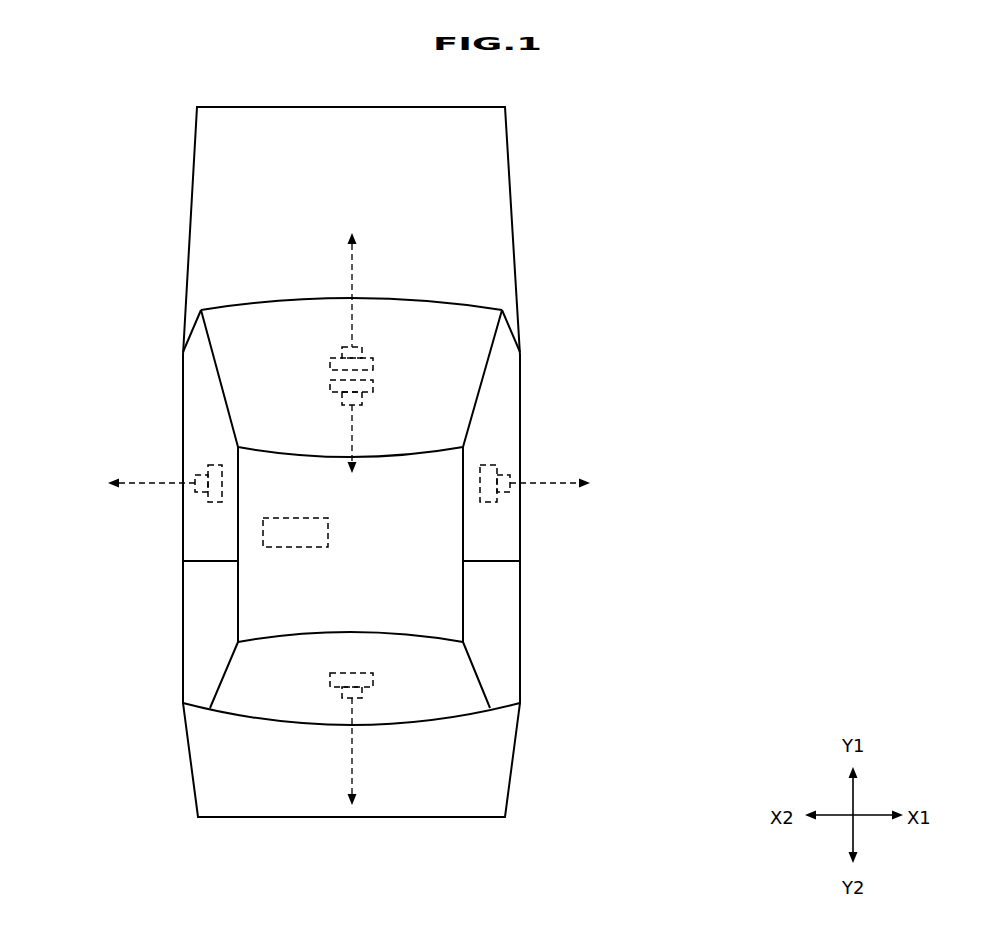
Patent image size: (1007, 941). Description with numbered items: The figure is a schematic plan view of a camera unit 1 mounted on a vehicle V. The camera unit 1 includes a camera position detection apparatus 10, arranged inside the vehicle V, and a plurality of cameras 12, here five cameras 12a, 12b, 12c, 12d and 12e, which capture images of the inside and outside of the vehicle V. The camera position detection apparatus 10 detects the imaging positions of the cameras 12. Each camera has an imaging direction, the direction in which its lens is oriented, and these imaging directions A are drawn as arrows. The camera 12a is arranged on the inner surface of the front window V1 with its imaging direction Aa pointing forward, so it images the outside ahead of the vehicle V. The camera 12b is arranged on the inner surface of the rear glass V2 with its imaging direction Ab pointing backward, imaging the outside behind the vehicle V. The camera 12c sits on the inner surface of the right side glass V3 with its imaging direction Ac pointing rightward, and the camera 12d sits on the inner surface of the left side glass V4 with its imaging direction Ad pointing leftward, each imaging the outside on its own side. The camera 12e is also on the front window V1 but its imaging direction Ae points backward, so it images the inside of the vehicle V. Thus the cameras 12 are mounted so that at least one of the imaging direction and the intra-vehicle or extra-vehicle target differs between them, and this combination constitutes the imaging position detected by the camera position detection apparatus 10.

The camera unit 1 is at (587, 412).
The camera position detection apparatus 10 is at (290, 551).
The cameras 12 is at (348, 508).
The camera 12a is at (320, 356).
The camera 12b is at (395, 685).
The camera 12c is at (506, 465).
The camera 12d is at (195, 466).
The camera 12e is at (383, 386).
The vehicle V is at (533, 172).
The front window V1 is at (447, 327).
The rear glass V2 is at (422, 662).
The side glass V3 is at (490, 540).
The side glass V4 is at (215, 528).
The imaging directions A is at (346, 510).
The imaging direction Aa is at (348, 282).
The imaging direction Ab is at (352, 748).
The imaging direction Ac is at (537, 483).
The imaging direction Ad is at (167, 483).
The imaging direction Ae is at (352, 425).